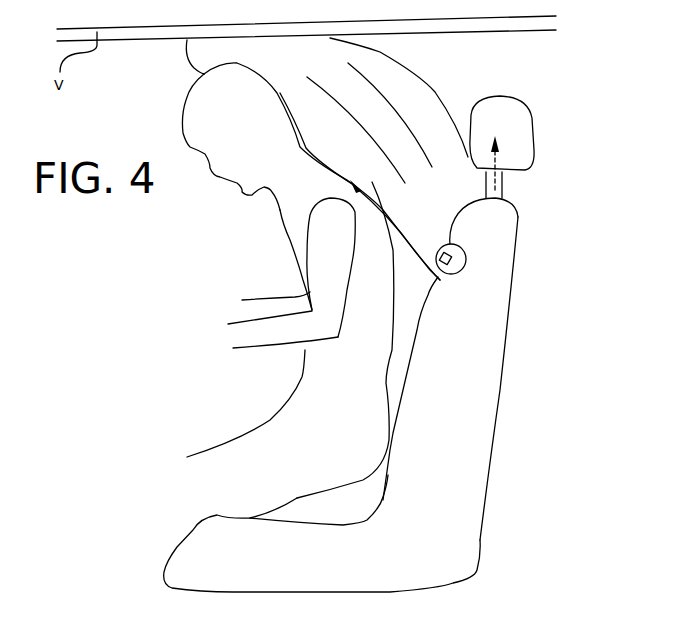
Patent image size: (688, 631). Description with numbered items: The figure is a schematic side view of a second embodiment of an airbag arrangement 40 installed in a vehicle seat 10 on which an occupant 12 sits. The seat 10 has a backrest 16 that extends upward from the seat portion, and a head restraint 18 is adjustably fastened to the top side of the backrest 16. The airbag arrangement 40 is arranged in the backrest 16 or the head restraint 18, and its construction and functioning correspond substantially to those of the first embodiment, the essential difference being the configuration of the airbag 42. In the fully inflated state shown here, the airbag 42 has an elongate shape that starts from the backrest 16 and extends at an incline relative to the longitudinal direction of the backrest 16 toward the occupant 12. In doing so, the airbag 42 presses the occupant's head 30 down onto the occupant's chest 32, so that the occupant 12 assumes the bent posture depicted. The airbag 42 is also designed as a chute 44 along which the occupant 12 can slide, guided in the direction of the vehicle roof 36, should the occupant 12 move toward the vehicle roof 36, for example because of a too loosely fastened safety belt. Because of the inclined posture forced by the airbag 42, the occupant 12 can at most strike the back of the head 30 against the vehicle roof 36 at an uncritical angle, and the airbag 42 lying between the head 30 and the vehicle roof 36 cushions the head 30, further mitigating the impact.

The vehicle seat 10 is at (383, 343).
The occupant 12 is at (284, 280).
The backrest 16 is at (490, 327).
The head restraint 18 is at (523, 128).
The occupant's head 30 is at (200, 126).
The occupant's chest 32 is at (297, 252).
The vehicle roof 36 is at (528, 12).
The airbag arrangement 40 is at (482, 250).
The airbag 42 is at (305, 159).
The chute 44 is at (204, 78).